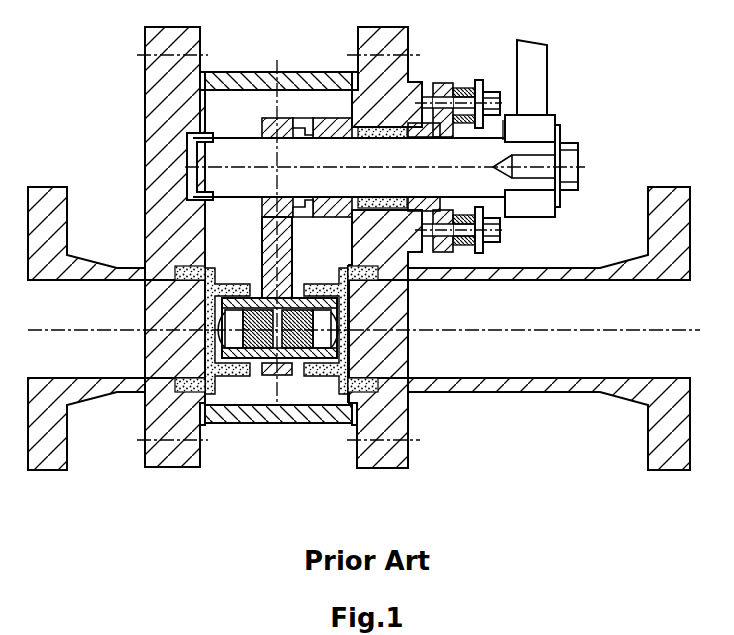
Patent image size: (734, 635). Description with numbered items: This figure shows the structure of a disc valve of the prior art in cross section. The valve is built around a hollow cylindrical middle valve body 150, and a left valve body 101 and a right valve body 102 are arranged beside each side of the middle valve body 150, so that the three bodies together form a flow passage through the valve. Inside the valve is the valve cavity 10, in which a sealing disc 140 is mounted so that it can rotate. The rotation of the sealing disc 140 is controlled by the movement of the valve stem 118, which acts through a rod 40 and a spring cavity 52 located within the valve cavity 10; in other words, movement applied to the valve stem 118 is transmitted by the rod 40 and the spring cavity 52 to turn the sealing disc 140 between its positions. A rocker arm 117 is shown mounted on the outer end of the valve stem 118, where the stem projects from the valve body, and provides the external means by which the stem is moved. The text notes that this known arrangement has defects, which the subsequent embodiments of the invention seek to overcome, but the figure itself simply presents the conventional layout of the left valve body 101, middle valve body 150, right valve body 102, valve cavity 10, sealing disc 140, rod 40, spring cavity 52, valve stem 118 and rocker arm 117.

The valve cavity 10 is at (250, 213).
The rod 40 is at (258, 262).
The spring cavity 52 is at (255, 357).
The left valve body 101 is at (182, 423).
The right valve body 102 is at (380, 413).
The rocker arm 117 is at (530, 122).
The valve stem 118 is at (467, 170).
The sealing disc 140 is at (383, 362).
The middle valve body 150 is at (308, 425).